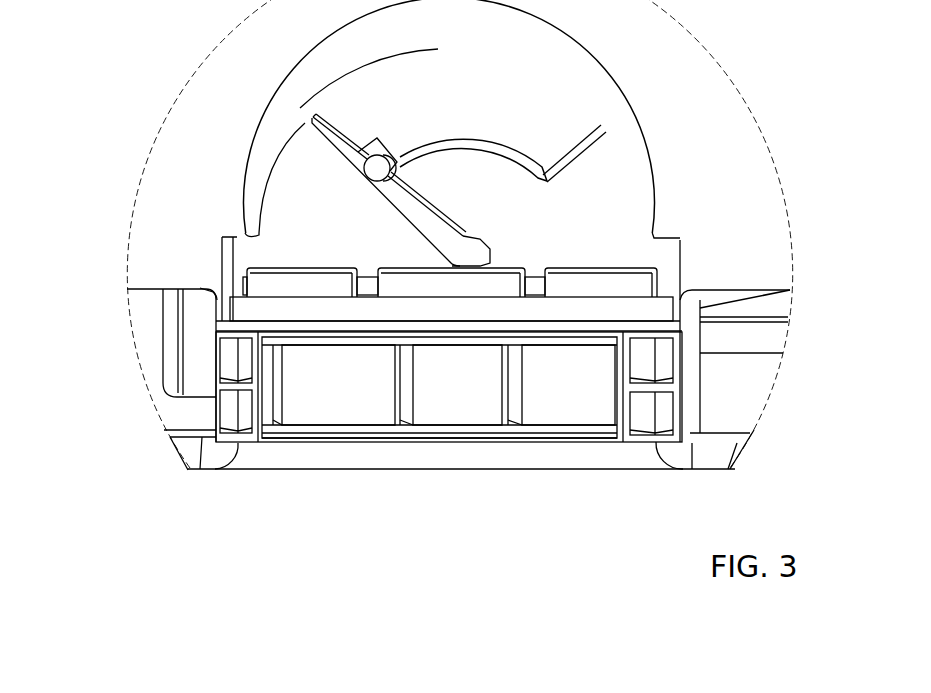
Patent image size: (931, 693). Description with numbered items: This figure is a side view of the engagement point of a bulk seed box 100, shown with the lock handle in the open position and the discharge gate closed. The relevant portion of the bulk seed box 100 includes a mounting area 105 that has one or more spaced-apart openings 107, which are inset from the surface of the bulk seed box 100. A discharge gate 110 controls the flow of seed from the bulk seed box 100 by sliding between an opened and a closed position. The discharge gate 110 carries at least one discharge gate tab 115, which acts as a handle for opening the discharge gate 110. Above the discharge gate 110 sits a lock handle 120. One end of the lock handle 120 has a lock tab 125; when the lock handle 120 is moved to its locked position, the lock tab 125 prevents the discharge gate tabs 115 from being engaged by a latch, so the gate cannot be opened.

The bulk seed box 100 is at (185, 183).
The mounting area 105 is at (297, 420).
The openings 107 is at (547, 433).
The discharge gate 110 is at (677, 276).
The discharge gate tab 115 is at (500, 282).
The lock handle 120 is at (413, 210).
The lock tab 125 is at (497, 242).